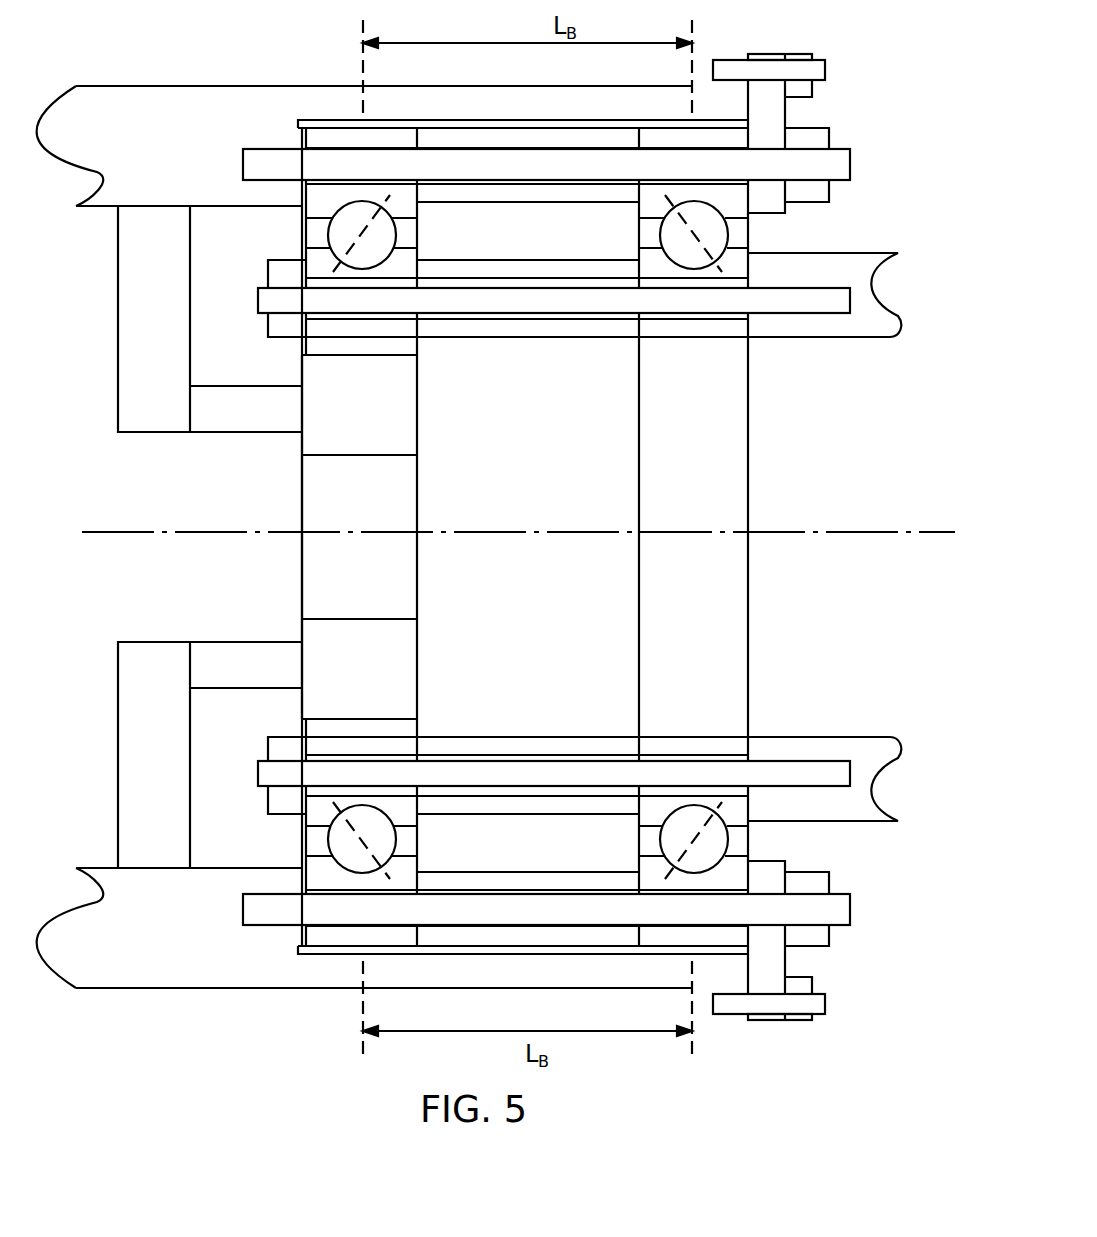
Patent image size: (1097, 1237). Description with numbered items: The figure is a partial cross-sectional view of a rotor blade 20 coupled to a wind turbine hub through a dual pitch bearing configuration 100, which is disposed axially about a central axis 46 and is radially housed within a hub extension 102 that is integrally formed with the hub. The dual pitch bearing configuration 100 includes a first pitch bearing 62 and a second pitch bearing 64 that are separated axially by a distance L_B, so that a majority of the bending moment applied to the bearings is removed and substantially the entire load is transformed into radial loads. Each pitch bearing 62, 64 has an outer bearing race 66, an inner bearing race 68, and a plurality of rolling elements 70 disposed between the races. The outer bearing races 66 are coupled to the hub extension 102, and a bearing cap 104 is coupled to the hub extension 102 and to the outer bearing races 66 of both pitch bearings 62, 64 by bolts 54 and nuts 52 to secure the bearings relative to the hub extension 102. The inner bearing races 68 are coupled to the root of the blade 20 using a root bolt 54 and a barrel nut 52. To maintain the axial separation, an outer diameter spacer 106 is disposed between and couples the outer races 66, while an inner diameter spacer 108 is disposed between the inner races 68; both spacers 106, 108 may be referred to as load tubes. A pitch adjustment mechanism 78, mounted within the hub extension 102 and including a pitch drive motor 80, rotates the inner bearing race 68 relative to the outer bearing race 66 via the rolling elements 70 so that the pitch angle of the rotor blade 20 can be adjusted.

The rotor blade 20 is at (900, 327).
The central axis 46 is at (840, 532).
The nut 52 is at (812, 90).
The bolt 54 is at (850, 162).
The first pitch bearing 62 is at (292, 230).
The second pitch bearing 64 is at (770, 230).
The outer bearing race 66 is at (408, 212).
The inner bearing race 68 is at (408, 255).
The rolling element 70 is at (397, 229).
The pitch adjustment mechanism 78 is at (318, 457).
The pitch drive motor 80 is at (359, 537).
The dual pitch bearing configuration 100 is at (476, 385).
The hub extension 102 is at (146, 85).
The bearing cap 104 is at (768, 57).
The outer diameter spacer 106 is at (492, 135).
The inner diameter spacer 108 is at (567, 338).